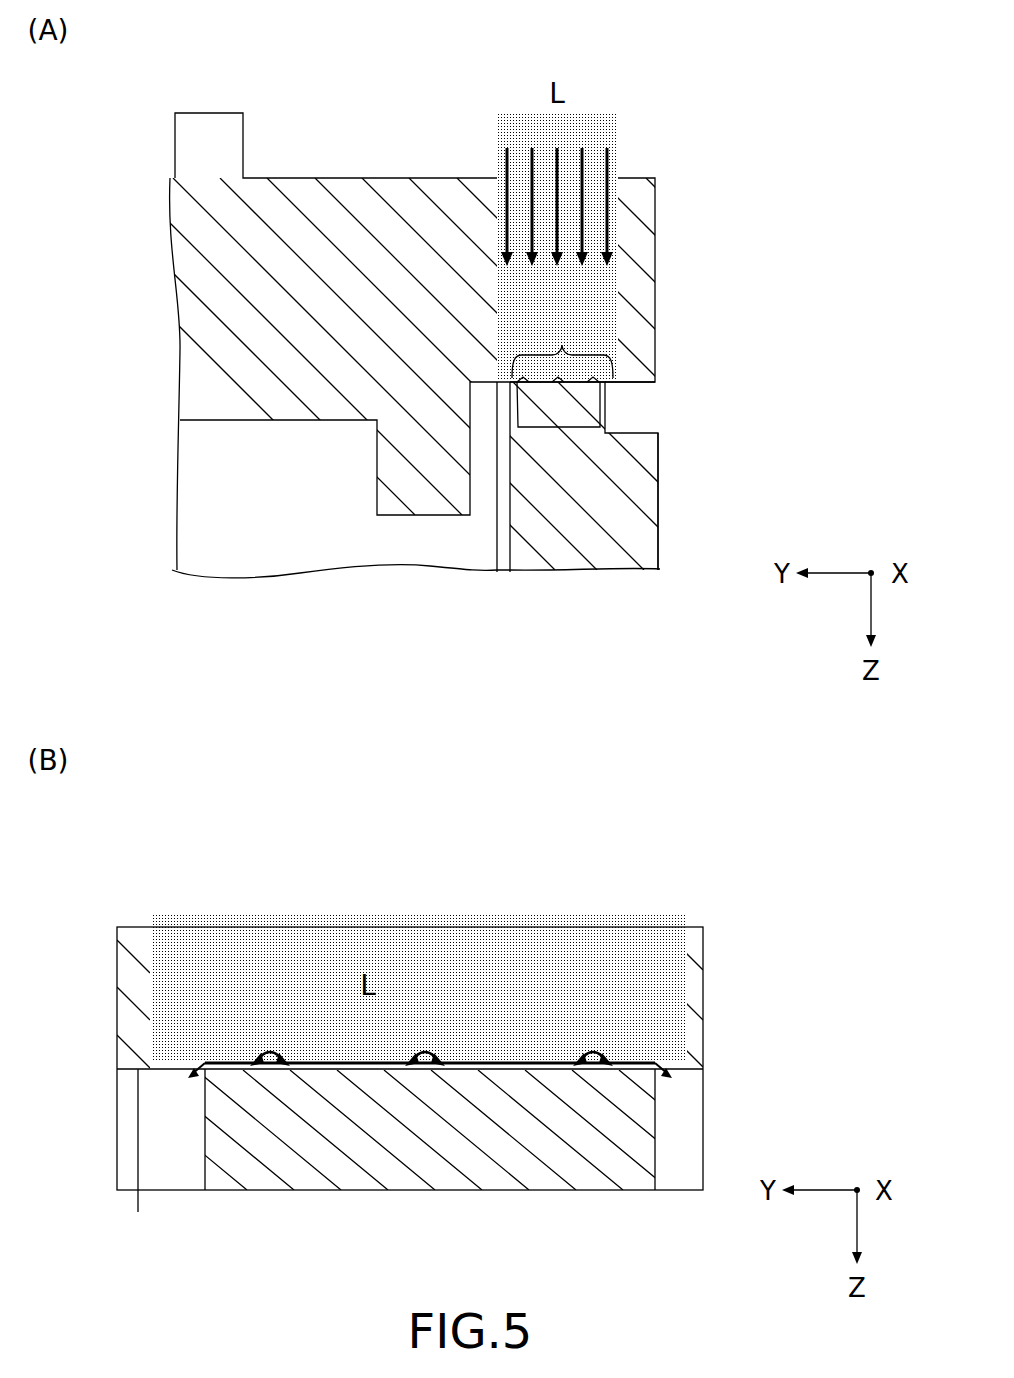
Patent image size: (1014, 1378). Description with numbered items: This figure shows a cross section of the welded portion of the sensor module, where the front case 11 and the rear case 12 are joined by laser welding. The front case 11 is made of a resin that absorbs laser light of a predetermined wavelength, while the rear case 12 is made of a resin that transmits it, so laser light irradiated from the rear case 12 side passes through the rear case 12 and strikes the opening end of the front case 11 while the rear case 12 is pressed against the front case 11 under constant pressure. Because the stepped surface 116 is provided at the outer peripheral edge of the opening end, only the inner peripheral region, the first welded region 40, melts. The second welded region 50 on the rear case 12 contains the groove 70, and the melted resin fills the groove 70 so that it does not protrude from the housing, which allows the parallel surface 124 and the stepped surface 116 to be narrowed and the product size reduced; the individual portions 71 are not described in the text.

The front case 11 is at (684, 533).
The rear case 12 is at (308, 158).
The first welded region 40 is at (560, 430).
The second welded region 50 is at (562, 345).
The stepped surface 116 is at (640, 430).
The parallel surface 124 is at (630, 383).
The groove 70 is at (610, 837).
The bonding region 71 is at (593, 1050).